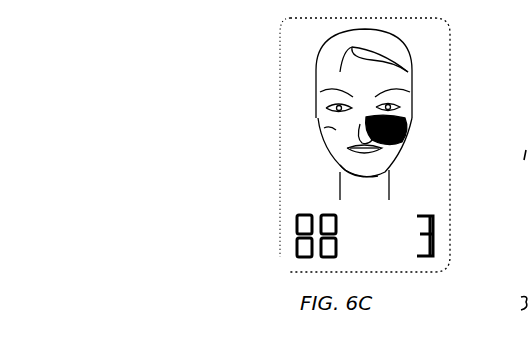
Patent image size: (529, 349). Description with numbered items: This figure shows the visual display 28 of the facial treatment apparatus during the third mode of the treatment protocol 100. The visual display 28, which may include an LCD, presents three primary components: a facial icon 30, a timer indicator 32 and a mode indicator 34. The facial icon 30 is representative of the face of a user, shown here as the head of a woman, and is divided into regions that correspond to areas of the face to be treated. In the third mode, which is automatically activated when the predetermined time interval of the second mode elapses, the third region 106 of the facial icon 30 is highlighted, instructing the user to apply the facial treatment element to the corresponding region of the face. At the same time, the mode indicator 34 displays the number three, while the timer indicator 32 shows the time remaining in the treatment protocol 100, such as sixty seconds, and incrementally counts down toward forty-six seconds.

The visual display 28 is at (263, 58).
The facial icon 30 is at (333, 132).
The third region 106 is at (410, 122).
The timer indicator 32 is at (288, 248).
The mode indicator 34 is at (446, 229).
The treatment protocol 100 is at (130, 213).